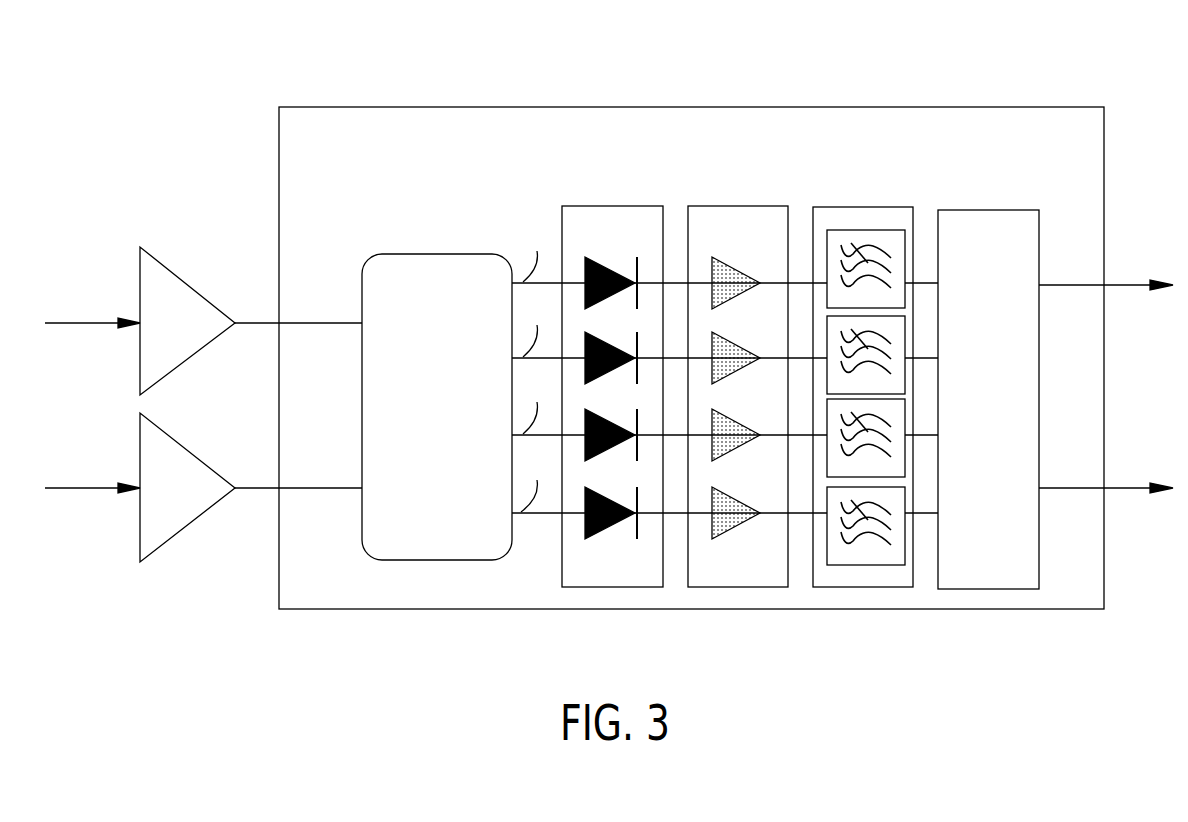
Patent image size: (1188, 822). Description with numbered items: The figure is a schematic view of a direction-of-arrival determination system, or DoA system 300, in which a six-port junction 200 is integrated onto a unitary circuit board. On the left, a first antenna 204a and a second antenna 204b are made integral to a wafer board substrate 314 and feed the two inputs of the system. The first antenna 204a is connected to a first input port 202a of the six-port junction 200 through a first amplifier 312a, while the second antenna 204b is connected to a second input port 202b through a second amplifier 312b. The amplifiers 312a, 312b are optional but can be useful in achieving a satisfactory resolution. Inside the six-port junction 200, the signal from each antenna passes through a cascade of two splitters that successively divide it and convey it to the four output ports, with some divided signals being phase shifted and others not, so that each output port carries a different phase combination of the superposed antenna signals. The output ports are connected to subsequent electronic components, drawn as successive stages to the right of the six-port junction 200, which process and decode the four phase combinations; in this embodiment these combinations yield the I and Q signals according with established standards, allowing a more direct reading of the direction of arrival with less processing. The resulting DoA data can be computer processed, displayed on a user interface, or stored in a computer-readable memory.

The DoA system 300 is at (940, 73).
The wafer board substrate 314 is at (531, 106).
The six-port junction 200 is at (476, 582).
The first amplifier 312a is at (147, 251).
The second amplifier 312b is at (160, 548).
The first antenna 204a is at (82, 327).
The second antenna 204b is at (82, 492).
The first input port 202a is at (249, 320).
The second input port 202b is at (247, 484).